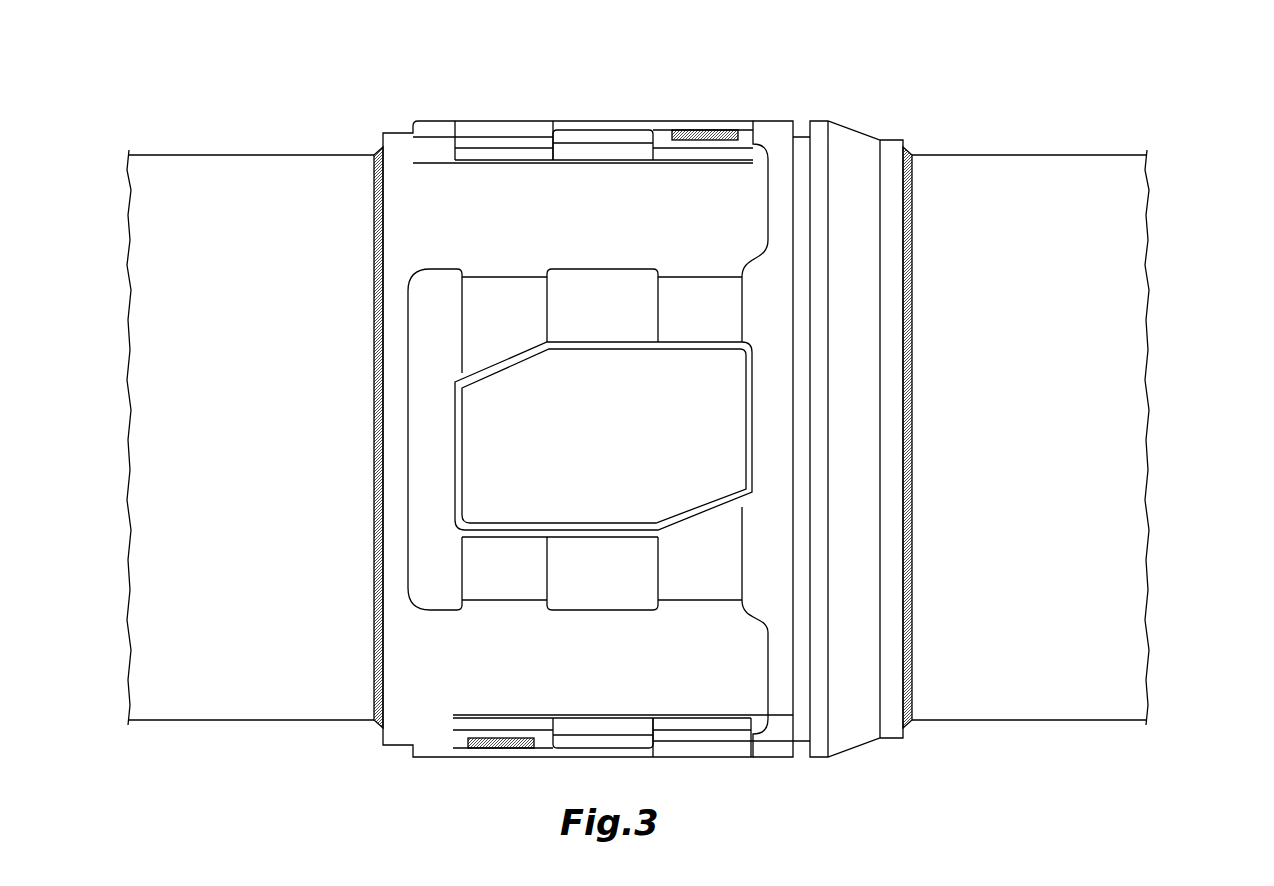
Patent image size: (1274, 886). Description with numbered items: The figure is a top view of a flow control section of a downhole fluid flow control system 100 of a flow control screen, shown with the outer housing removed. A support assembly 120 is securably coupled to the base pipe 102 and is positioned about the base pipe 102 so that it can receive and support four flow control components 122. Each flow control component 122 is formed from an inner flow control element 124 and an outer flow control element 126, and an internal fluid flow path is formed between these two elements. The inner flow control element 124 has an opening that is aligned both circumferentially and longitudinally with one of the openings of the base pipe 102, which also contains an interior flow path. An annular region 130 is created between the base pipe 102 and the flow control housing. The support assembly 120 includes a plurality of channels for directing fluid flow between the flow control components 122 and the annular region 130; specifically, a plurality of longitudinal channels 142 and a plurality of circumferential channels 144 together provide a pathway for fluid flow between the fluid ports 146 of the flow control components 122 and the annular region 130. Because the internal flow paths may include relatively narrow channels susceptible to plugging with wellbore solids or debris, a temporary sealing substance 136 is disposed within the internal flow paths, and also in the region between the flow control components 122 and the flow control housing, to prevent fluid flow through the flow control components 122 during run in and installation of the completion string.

The fluid flow control system 100 is at (1182, 118).
The base pipe 102 is at (236, 156).
The support assembly 120 is at (853, 137).
The flow control component 122 is at (627, 118).
The inner flow control element 124 is at (528, 140).
The outer flow control element 126 is at (486, 128).
The annular region 130 is at (203, 366).
The temporary sealing substance 136 is at (698, 135).
The longitudinal channel 142 is at (405, 235).
The circumferential channel 144 is at (503, 290).
The fluid port 146 is at (732, 130).